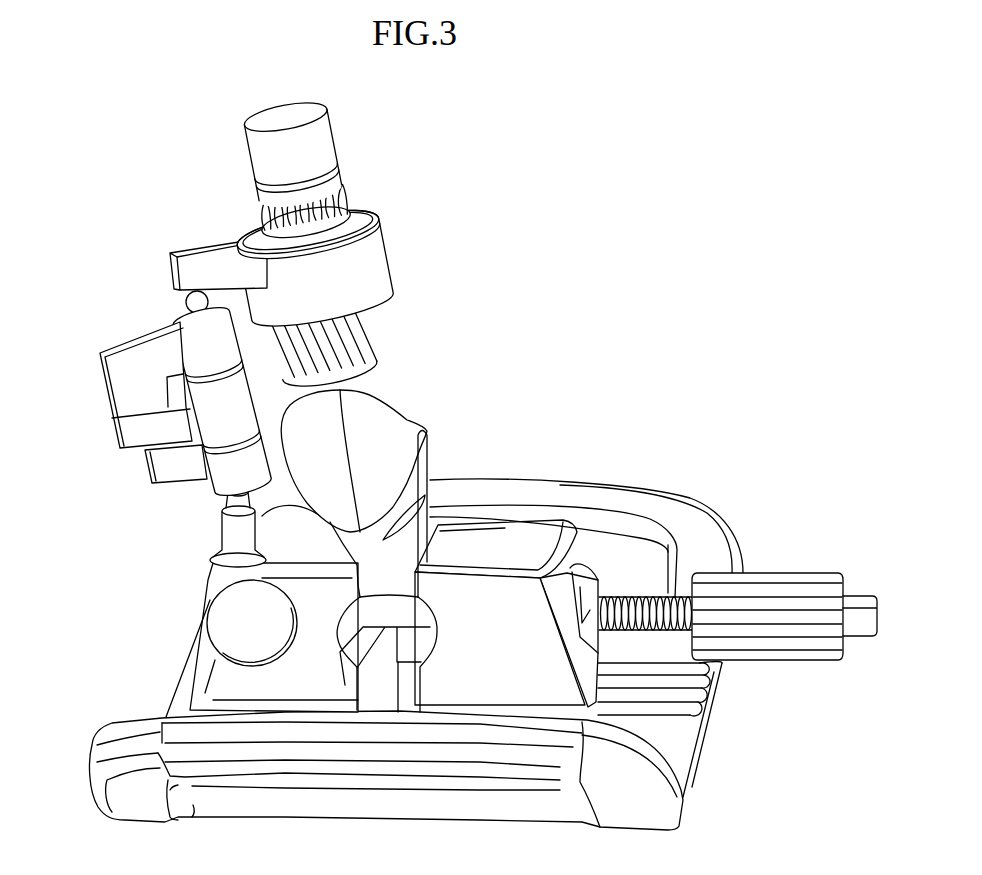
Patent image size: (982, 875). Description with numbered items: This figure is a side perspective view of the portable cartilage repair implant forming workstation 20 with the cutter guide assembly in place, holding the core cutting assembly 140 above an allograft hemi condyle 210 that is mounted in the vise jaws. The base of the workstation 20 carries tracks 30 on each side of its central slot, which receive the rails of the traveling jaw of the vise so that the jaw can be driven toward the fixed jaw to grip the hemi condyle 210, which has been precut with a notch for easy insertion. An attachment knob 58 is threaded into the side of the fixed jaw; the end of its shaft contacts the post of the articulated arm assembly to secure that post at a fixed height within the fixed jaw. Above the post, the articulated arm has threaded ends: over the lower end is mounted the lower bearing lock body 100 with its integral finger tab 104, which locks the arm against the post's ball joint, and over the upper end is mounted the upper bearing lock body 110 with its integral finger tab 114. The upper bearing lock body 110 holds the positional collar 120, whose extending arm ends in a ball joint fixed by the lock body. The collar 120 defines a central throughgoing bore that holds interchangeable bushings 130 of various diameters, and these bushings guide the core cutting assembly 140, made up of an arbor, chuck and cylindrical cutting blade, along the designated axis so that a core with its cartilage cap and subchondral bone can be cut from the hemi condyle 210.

The workstation 20 is at (688, 414).
The tracks 30 is at (707, 723).
The attachment knob 58 is at (210, 623).
The lower bearing lock body 100 is at (213, 480).
The finger tab 104 is at (152, 482).
The upper bearing lock body 110 is at (190, 355).
The finger tab 114 is at (102, 384).
The positional collar 120 is at (393, 277).
The interchangeable bushings 130 is at (377, 218).
The core cutting assembly 140 is at (343, 183).
The allograft hemi condyle 210 is at (410, 427).